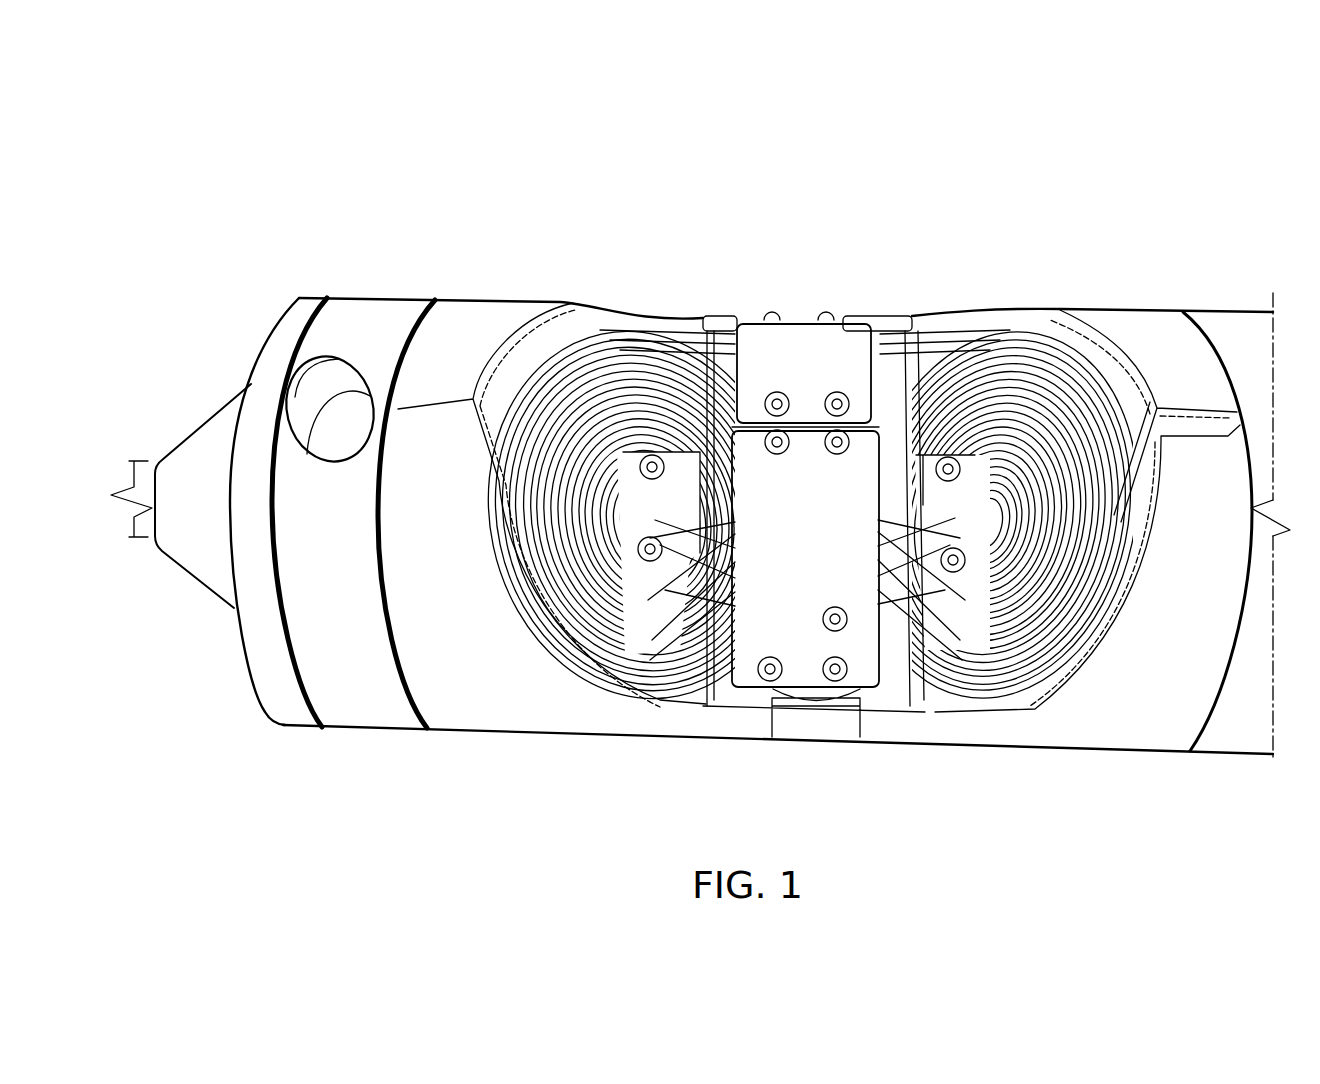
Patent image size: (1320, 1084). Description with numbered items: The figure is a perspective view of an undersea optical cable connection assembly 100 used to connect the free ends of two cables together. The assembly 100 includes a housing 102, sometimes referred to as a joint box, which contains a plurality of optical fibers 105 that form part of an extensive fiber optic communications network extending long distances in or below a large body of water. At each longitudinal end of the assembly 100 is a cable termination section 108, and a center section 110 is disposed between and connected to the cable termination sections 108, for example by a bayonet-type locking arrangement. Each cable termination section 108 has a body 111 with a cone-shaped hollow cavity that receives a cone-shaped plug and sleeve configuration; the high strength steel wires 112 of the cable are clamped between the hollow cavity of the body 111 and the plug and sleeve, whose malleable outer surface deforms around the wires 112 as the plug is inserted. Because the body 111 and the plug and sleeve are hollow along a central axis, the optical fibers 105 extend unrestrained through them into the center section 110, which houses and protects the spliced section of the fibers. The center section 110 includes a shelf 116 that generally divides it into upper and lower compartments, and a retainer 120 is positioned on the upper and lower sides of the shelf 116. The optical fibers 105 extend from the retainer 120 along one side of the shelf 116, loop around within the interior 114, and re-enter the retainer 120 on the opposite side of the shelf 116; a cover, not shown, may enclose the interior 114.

The undersea optical cable connection assembly 100 is at (1068, 136).
The housing 102 is at (477, 316).
The optical fibers 105 is at (680, 338).
The cable termination section 108 is at (203, 432).
The center section 110 is at (1036, 734).
The body 111 is at (356, 326).
The high strength steel wires 112 is at (138, 492).
The interior 114 is at (562, 332).
The shelf 116 is at (879, 324).
The retainer 120 is at (802, 336).